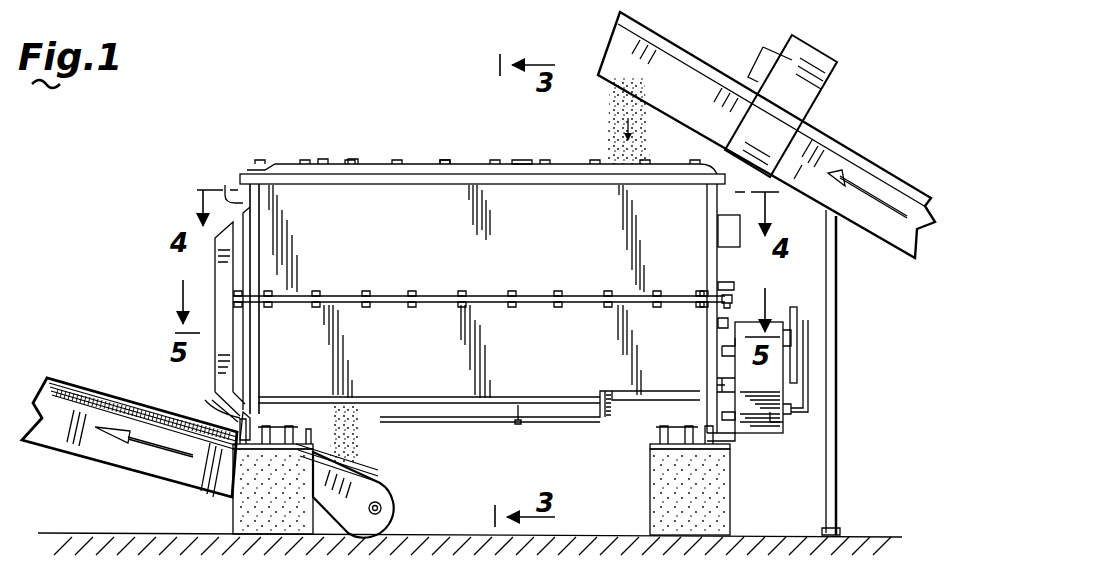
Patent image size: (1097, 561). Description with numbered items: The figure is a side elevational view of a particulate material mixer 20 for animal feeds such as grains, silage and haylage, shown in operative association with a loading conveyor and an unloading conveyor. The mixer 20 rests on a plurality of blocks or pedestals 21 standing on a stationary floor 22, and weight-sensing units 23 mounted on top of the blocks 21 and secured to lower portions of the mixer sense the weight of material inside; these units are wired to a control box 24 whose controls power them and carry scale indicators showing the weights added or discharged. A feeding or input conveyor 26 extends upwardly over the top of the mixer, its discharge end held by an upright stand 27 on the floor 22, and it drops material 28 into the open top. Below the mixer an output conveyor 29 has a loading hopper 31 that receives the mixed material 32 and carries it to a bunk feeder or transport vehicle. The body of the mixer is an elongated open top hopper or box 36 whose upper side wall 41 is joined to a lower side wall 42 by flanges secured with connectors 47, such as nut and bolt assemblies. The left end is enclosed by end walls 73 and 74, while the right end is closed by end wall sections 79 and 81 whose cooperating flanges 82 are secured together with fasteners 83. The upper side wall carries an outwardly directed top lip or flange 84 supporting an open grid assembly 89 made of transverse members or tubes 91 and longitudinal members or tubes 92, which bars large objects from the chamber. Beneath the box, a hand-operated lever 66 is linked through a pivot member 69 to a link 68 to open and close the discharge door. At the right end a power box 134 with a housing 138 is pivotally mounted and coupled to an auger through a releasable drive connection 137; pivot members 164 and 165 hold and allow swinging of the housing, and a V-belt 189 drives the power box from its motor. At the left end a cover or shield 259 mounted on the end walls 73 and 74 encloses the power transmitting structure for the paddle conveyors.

The mixer 20 is at (305, 118).
The blocks or pedestals 21 is at (237, 513).
The floor 22 is at (860, 536).
The weight-sensing units 23 is at (290, 426).
The control box 24 is at (718, 229).
The feeding or input conveyor 26 is at (698, 62).
The upright stand 27 is at (838, 345).
The material 28 is at (610, 126).
The output conveyor 29 is at (75, 410).
The loading hopper 31 is at (378, 470).
The mixed material 32 is at (366, 436).
The hopper or box 36 is at (262, 258).
The upper side wall 41 is at (421, 241).
The lower side wall 42 is at (408, 352).
The connectors 47 is at (468, 293).
The hand-operated lever 66 is at (582, 423).
The link 68 is at (451, 416).
The pivot member 69 is at (521, 426).
The end wall 73 is at (226, 187).
The end wall 74 is at (250, 372).
The end wall section 79 is at (718, 266).
The end wall section 81 is at (722, 325).
The cooperating flanges 82 is at (732, 305).
The fasteners 83 is at (718, 292).
The top lip or flange 84 is at (542, 184).
The open grid assembly 89 is at (530, 162).
The transverse members or tubes 91 is at (350, 162).
The longitudinal members or tubes 92 is at (443, 163).
The power box 134 is at (795, 303).
The releasable drive connection 137 is at (720, 387).
The housing 138 is at (770, 428).
The pivot members 164 is at (730, 358).
The pivot member 165 is at (725, 424).
The V-belt 189 is at (810, 318).
The cover or shield 259 is at (222, 397).